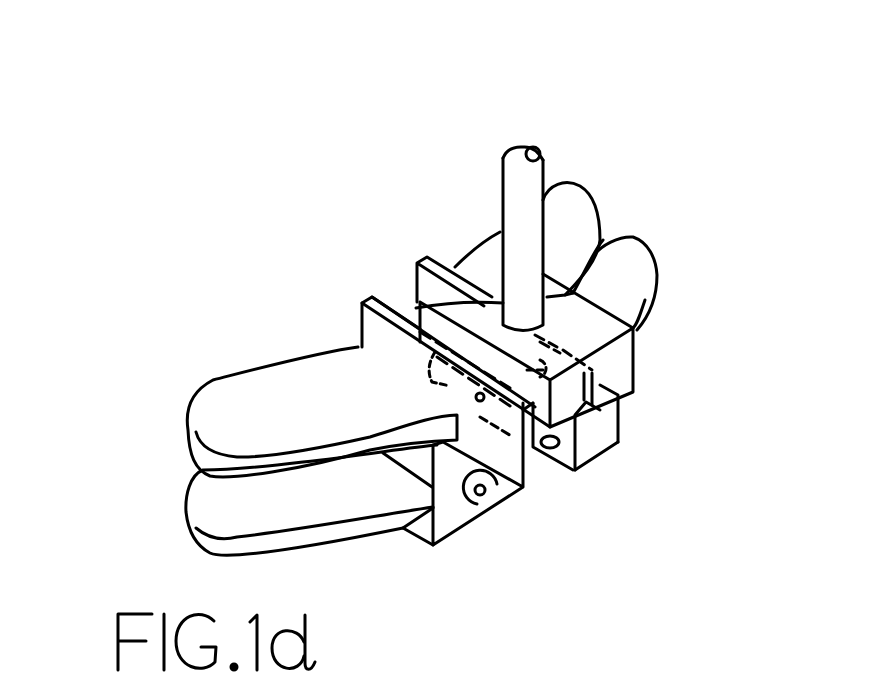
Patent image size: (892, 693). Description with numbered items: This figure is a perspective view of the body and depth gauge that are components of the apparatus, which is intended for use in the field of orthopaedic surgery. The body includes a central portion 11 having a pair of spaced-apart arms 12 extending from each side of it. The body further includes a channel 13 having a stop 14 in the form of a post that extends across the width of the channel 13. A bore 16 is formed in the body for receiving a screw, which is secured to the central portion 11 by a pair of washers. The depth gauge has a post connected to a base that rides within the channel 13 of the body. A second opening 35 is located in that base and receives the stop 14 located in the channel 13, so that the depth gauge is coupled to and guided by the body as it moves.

The central portion 11 is at (490, 490).
The spaced-apart arms 12 is at (395, 330).
The channel 13 is at (452, 205).
The stop 14 is at (593, 350).
The bore 16 is at (546, 543).
The second opening 35 is at (599, 476).